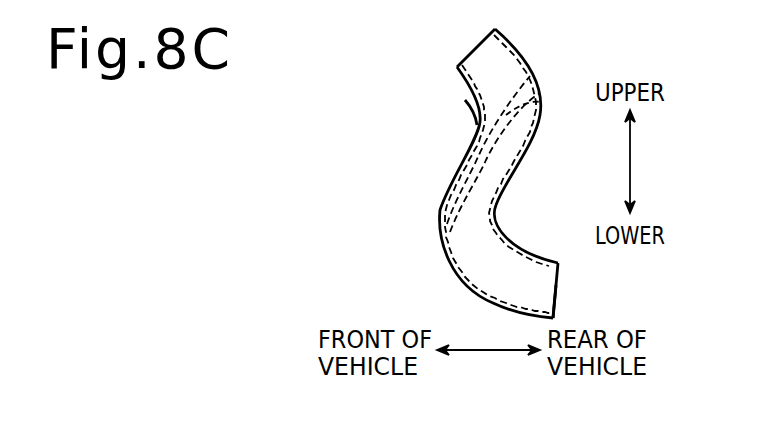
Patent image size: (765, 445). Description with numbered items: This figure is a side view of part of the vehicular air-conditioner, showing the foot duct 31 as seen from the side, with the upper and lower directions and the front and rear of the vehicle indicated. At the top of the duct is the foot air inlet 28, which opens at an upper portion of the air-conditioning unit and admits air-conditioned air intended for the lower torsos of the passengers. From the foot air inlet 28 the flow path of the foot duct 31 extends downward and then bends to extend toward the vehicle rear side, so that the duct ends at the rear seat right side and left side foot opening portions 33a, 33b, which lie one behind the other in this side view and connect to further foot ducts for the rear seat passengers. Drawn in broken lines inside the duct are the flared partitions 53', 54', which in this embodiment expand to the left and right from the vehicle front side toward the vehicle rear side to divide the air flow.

The foot air inlet 28 is at (479, 43).
The foot duct 31 is at (475, 113).
The flared partition 53' is at (537, 128).
The flared partition 54' is at (503, 153).
The rear seat right side foot opening portion 33a is at (558, 290).
The rear seat left side foot opening portion 33b is at (577, 293).